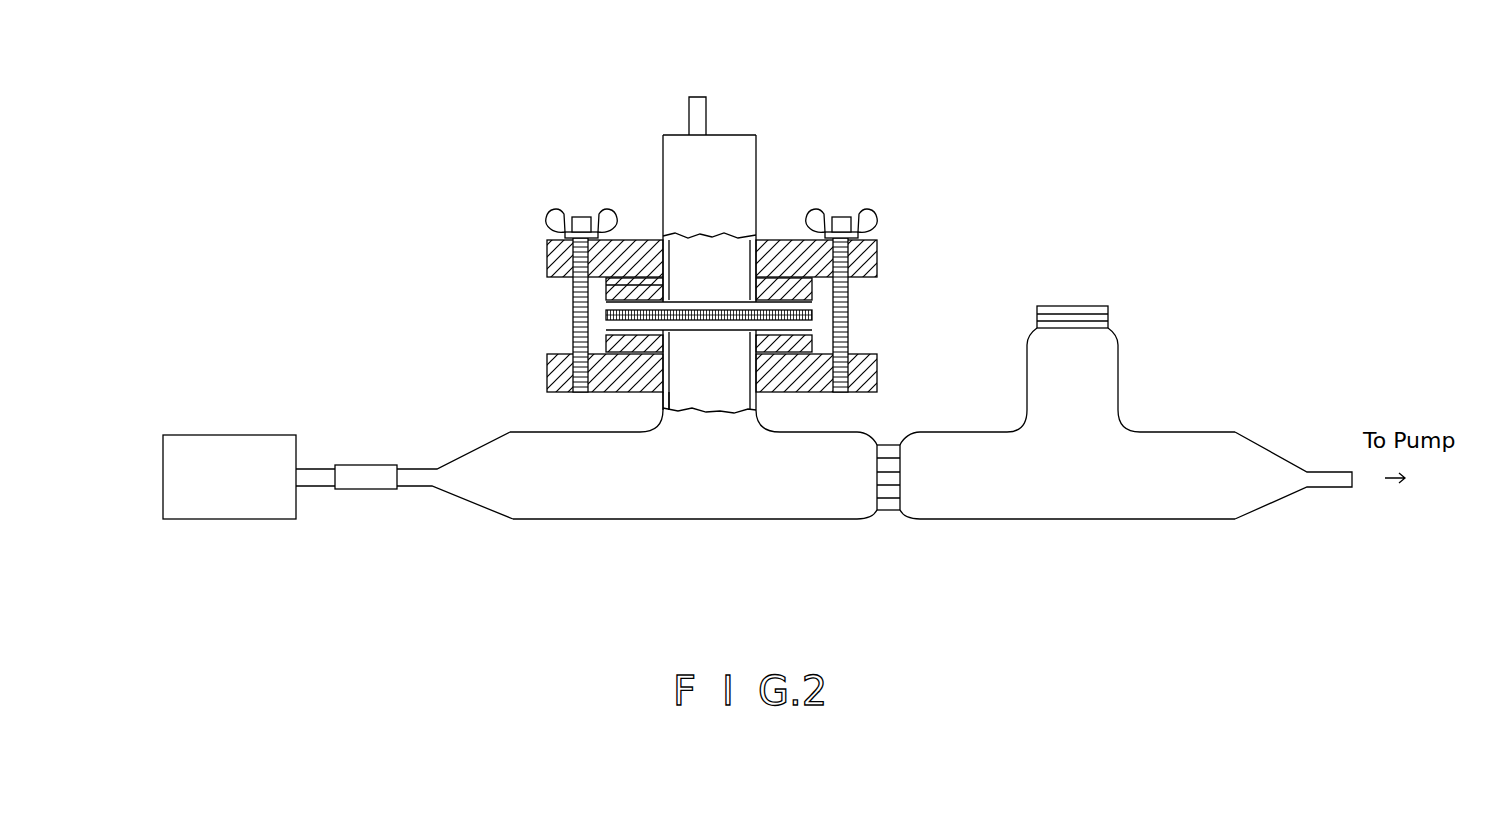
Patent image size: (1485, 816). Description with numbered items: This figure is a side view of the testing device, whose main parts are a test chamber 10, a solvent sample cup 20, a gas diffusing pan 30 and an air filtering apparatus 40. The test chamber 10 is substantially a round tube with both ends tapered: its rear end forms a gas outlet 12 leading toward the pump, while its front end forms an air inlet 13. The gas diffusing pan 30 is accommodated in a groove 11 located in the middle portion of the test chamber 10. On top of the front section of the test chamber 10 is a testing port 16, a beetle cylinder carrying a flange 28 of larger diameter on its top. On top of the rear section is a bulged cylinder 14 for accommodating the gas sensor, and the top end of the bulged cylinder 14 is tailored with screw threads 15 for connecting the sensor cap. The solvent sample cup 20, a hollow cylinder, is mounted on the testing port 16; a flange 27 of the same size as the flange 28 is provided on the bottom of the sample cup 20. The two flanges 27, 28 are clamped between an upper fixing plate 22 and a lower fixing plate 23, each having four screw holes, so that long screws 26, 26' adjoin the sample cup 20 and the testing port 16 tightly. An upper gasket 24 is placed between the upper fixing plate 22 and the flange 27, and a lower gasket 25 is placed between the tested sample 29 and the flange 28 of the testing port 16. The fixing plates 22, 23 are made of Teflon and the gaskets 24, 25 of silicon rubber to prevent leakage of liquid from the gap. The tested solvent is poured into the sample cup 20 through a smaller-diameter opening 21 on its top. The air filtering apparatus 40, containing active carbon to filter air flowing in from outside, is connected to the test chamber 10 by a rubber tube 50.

The test chamber 10 is at (525, 510).
The groove 11 is at (898, 512).
The gas outlet 12 is at (1325, 484).
The air inlet 13 is at (431, 484).
The bulged cylinder 14 is at (1113, 392).
The screw threads 15 is at (1103, 308).
The testing port 16 is at (657, 403).
The solvent sample cup 20 is at (732, 145).
The opening 21 is at (697, 100).
The upper fixing plate 22 is at (878, 262).
The lower fixing plate 23 is at (878, 368).
The upper gasket 24 is at (812, 283).
The lower gasket 25 is at (812, 323).
The long screw 26 is at (858, 281).
The long screw 26' is at (570, 279).
The flange 27 is at (606, 292).
The flange 28 is at (606, 340).
The tested sample 29 is at (633, 312).
The gas diffusing pan 30 is at (890, 447).
The air filtering apparatus 40 is at (204, 511).
The rubber tube 50 is at (363, 489).